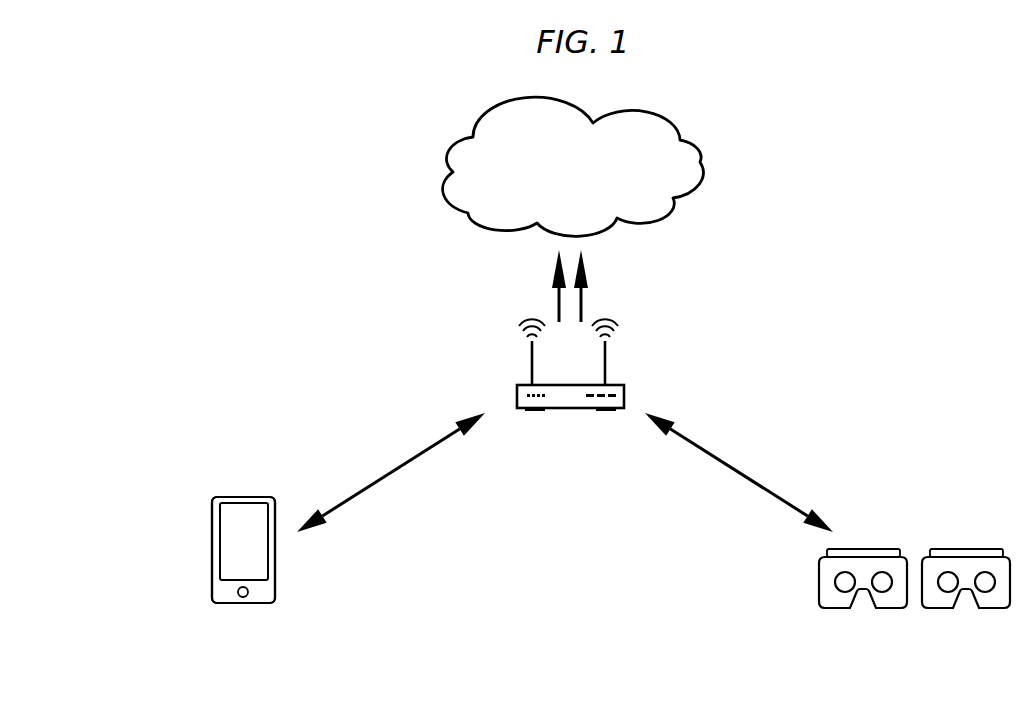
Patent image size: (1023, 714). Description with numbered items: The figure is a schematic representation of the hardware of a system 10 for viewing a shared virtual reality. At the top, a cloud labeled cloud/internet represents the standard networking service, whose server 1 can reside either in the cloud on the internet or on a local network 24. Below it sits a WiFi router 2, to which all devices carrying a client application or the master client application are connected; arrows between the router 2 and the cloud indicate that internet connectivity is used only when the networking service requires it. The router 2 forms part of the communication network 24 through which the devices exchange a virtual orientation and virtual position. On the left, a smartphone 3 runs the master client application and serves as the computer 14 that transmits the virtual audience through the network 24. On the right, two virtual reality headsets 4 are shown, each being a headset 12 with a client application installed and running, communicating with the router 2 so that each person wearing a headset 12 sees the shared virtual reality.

The system 10 is at (570, 330).
The standard networking service server 1 is at (549, 166).
The WiFi router 2 is at (554, 365).
The smartphone 3 is at (223, 550).
The virtual reality headset 4 is at (852, 578).
The headset 12 is at (957, 562).
The computer 14 is at (241, 489).
The communication network 24 is at (643, 394).